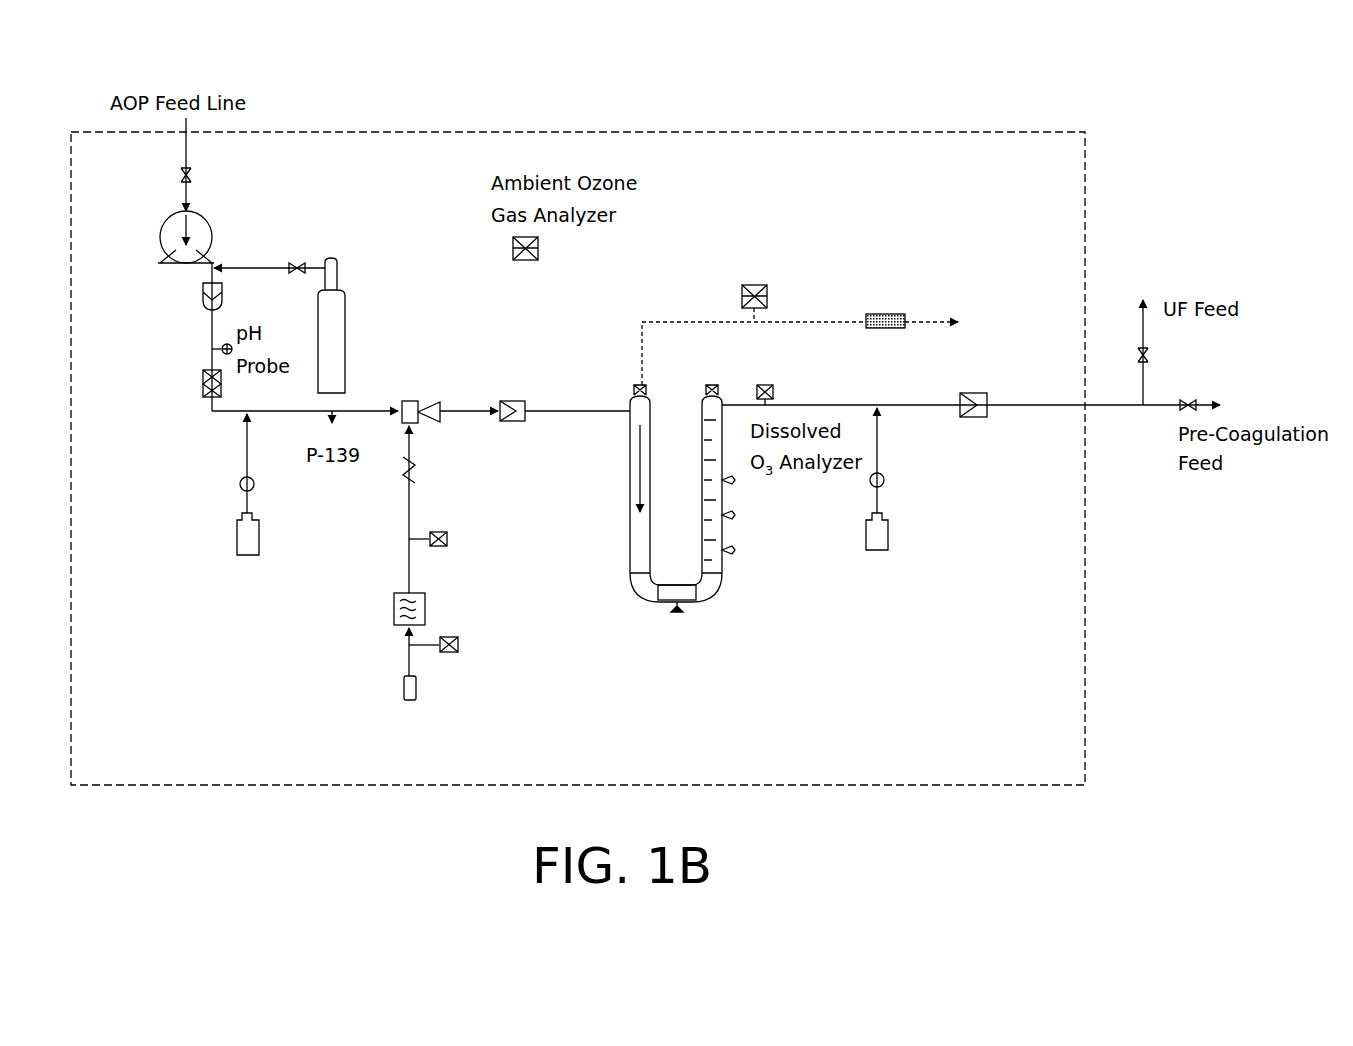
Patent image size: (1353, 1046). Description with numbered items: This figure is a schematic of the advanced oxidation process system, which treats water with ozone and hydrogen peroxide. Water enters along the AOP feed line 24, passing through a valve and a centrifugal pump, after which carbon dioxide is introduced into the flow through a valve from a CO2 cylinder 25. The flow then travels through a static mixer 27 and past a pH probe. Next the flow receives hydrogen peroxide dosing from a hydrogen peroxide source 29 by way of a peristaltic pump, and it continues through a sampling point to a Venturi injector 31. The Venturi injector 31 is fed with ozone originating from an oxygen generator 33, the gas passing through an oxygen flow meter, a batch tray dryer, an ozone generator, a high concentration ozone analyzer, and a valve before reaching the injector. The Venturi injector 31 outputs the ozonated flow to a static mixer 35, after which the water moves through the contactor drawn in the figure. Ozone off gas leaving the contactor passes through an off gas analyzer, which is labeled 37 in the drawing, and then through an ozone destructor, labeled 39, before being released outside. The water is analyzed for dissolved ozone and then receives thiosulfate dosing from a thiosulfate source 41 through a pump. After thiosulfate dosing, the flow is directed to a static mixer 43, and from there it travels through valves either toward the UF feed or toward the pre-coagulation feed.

The AOP feed line 24 is at (1186, 114).
The CO2 cylinder 25 is at (346, 330).
The static mixer 27 is at (204, 308).
The hydrogen peroxide source 29 is at (258, 558).
The Venturi injector 31 is at (428, 421).
The oxygen generator 33 is at (586, 669).
The static mixer 35 is at (523, 409).
The ozone off gas analyzer 37 is at (742, 297).
The ozone destructor 39 is at (884, 314).
The thiosulfate source 41 is at (889, 545).
The static mixer 43 is at (986, 393).